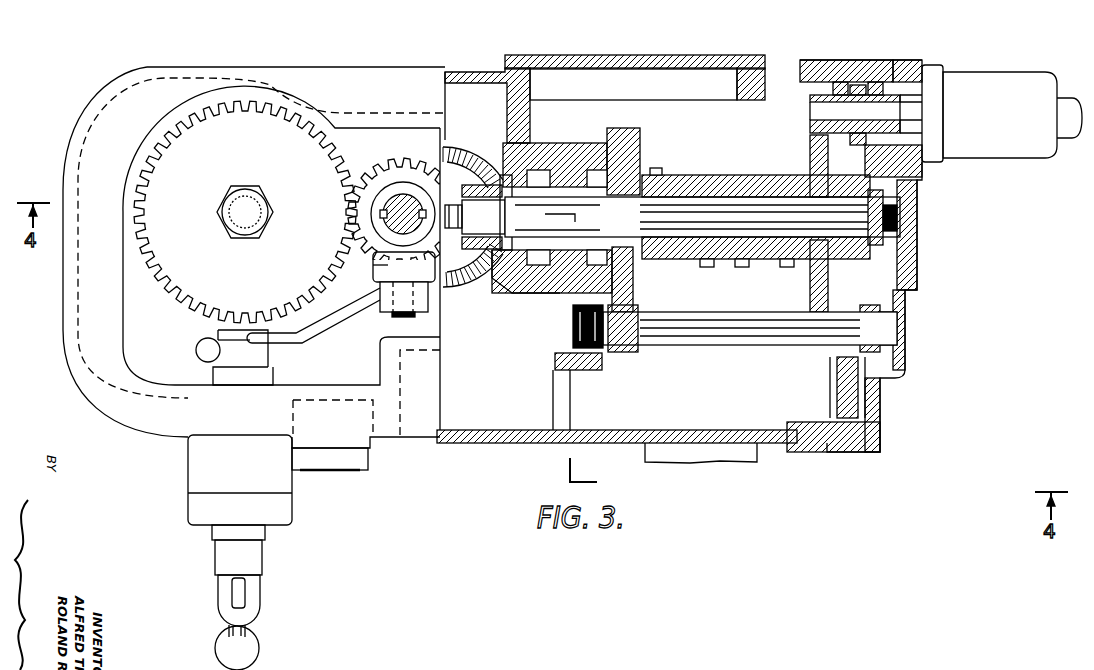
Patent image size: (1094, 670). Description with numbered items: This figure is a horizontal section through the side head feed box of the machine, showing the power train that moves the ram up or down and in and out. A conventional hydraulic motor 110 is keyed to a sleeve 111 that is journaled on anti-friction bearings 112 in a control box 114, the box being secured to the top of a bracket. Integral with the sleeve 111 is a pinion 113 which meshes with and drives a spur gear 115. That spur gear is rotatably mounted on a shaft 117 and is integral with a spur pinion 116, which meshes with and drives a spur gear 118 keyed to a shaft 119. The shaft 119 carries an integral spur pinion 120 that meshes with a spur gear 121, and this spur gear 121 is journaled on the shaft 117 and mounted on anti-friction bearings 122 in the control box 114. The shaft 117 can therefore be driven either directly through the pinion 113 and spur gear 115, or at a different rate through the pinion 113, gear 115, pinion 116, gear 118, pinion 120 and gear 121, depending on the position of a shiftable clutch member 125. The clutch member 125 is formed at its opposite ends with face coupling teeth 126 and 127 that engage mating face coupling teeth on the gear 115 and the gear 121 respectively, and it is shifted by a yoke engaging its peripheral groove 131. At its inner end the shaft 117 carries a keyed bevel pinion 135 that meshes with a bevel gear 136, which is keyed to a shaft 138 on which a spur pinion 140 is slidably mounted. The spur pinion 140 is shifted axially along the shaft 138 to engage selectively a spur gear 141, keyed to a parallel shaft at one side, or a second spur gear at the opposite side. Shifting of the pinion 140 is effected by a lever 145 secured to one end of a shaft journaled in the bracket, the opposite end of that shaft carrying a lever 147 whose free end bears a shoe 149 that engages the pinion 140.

The hydraulic motor 110 is at (990, 146).
The sleeve 111 is at (889, 97).
The anti-friction bearings 112 is at (884, 82).
The pinion 113 is at (810, 128).
The control box 114 is at (800, 446).
The spur gear 115 is at (808, 292).
The spur pinion 116 is at (840, 200).
The shaft 117 is at (750, 196).
The spur gear 118 is at (850, 400).
The shaft 119 is at (765, 343).
The spur pinion 120 is at (627, 349).
The spur gear 121 is at (626, 290).
The anti-friction bearings 122 is at (592, 175).
The shiftable clutch member 125 is at (742, 267).
The face coupling teeth 126 is at (786, 261).
The face coupling teeth 127 is at (668, 165).
The peripheral groove 131 is at (705, 268).
The bevel pinion 135 is at (486, 184).
The bevel gear 136 is at (452, 281).
The shaft 138 is at (405, 200).
The spur pinion 140 is at (368, 182).
The spur gear 141 is at (203, 292).
The lever 145 is at (250, 612).
The lever 147 is at (308, 325).
The shoe 149 is at (387, 264).